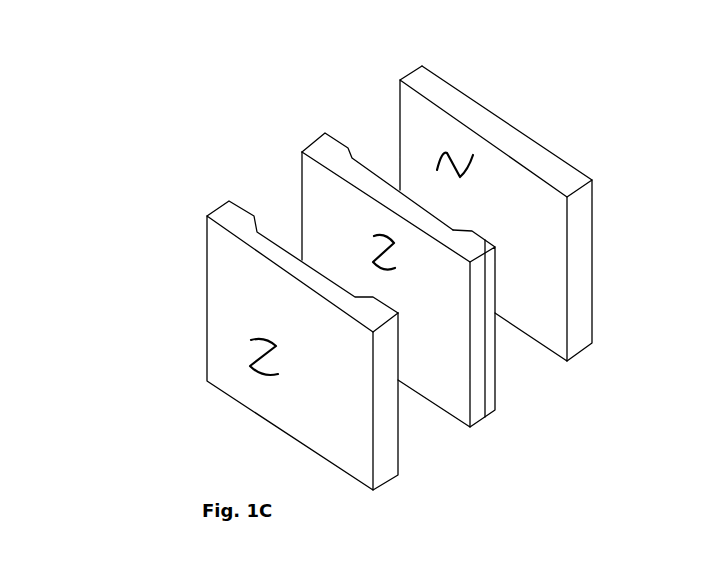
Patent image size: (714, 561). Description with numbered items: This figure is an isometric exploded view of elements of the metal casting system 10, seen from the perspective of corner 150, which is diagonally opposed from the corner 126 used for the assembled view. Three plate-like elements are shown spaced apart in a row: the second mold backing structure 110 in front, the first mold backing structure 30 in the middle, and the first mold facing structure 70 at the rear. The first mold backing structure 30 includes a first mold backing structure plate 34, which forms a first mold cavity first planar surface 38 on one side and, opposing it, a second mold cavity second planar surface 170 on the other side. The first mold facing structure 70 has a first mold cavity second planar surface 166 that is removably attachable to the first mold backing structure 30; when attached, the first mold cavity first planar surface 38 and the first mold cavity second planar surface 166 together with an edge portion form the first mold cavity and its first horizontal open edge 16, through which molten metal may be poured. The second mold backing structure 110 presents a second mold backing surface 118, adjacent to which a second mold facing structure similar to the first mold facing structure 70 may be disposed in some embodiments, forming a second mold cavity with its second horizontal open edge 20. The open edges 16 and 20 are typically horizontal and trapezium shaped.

The metal casting system 10 is at (601, 343).
The first horizontal open edge 16 is at (452, 232).
The second horizontal open edge 20 is at (290, 253).
The first mold backing structure 30 is at (313, 118).
The first mold backing structure plate 34 is at (300, 167).
The first mold cavity first planar surface 38 is at (378, 158).
The first mold facing structure 70 is at (400, 80).
The second mold backing structure 110 is at (205, 275).
The second mold backing surface 118 is at (250, 345).
The corner 126 is at (427, 59).
The corner 150 is at (366, 339).
The first mold cavity second planar surface 166 is at (462, 155).
The second mold cavity second planar surface 170 is at (373, 238).